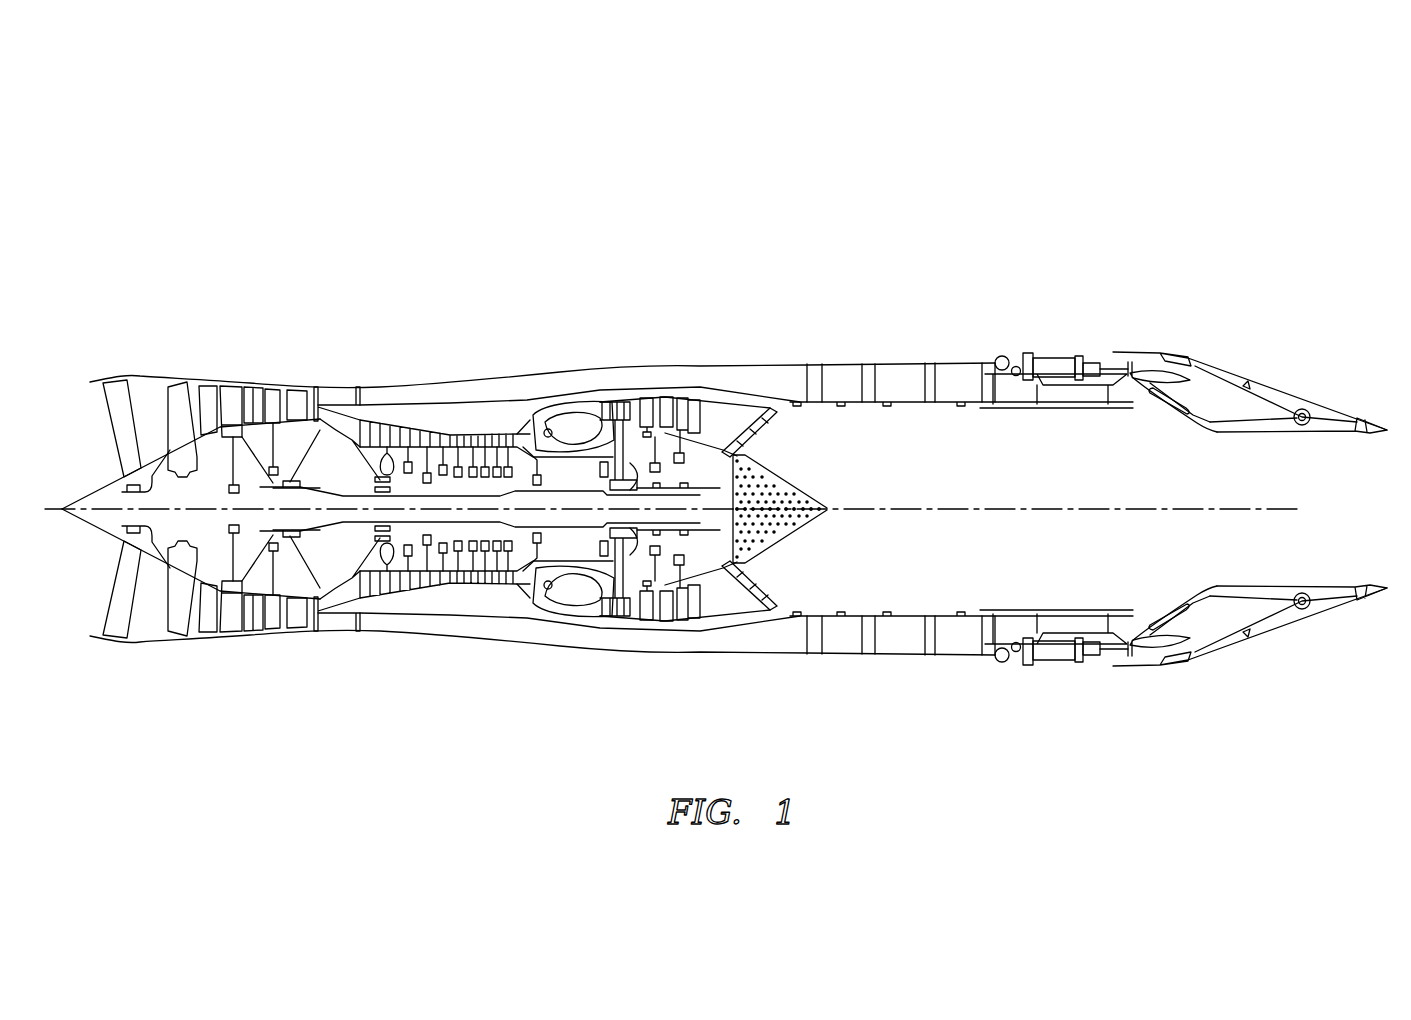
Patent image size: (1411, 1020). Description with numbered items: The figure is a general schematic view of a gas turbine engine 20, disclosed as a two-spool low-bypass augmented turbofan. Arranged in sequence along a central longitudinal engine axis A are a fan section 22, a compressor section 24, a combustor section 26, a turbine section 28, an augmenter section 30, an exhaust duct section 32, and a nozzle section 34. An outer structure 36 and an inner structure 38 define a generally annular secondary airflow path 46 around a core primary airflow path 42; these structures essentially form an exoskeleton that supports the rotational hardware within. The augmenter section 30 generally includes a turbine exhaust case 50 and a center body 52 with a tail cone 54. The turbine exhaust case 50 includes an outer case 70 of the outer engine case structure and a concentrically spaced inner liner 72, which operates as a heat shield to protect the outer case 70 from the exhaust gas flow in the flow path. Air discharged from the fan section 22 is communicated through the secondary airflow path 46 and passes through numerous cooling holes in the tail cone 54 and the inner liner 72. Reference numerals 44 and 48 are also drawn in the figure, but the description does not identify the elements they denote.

The gas turbine engine 20 is at (716, 433).
The fan section 22 is at (313, 302).
The compressor section 24 is at (540, 302).
The combustor section 26 is at (617, 302).
The turbine section 28 is at (698, 302).
The augmenter section 30 is at (835, 302).
The exhaust duct section 32 is at (1382, 295).
The nozzle section 34 is at (663, 620).
The outer structure 36 is at (323, 523).
The inner structure 38 is at (620, 613).
The core primary airflow path 42 is at (340, 632).
The compressor 44 is at (450, 600).
The secondary airflow path 46 is at (393, 623).
The splitter 48 is at (320, 610).
The turbine exhaust case 50 is at (757, 361).
The center body 52 is at (772, 556).
The tail cone 54 is at (818, 497).
The outer case 70 is at (838, 368).
The inner liner 72 is at (900, 405).
The central longitudinal engine axis A is at (1284, 511).